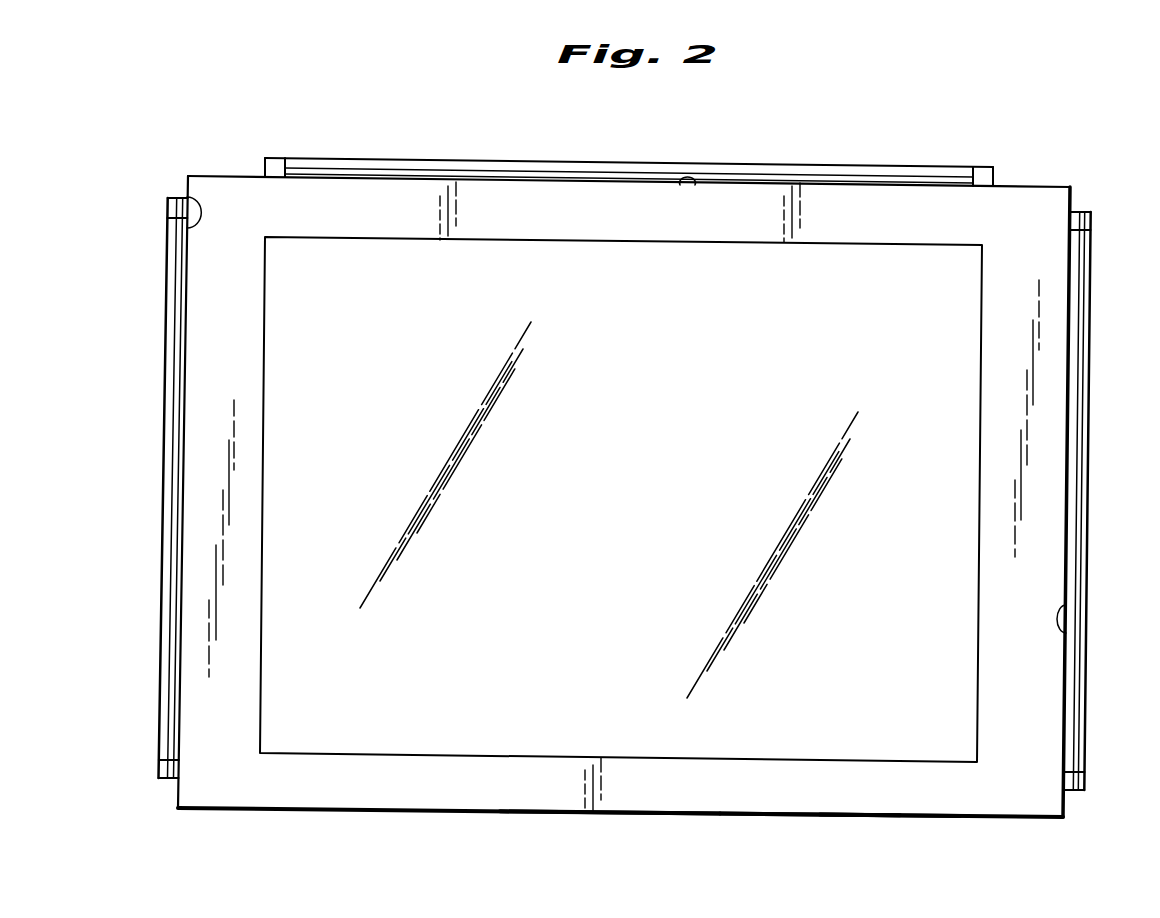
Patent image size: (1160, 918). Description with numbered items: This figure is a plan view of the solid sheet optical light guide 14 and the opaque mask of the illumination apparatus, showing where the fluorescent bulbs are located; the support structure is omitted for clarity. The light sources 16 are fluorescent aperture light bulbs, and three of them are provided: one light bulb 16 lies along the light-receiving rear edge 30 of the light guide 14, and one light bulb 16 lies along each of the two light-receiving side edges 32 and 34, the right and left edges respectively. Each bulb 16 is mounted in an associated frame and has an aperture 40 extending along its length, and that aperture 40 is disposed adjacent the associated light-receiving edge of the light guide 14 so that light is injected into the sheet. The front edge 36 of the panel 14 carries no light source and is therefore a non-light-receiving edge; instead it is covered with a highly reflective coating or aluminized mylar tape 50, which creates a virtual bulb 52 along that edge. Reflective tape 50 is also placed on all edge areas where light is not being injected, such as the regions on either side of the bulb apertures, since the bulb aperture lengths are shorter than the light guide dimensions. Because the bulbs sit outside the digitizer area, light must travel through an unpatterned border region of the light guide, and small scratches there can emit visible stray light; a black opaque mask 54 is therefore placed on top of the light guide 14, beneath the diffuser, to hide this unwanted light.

The solid sheet optical light guide 14 is at (592, 484).
The light source 16 is at (817, 164).
The light-receiving rear edge 30 is at (224, 176).
The light-receiving side edge 32 is at (1072, 193).
The light-receiving side edge 34 is at (177, 796).
The front edge 36 is at (259, 810).
The aperture 40 is at (187, 197).
The aluminized mylar tape 50 is at (617, 816).
The virtual bulb 52 is at (865, 818).
The black opaque mask 54 is at (773, 803).